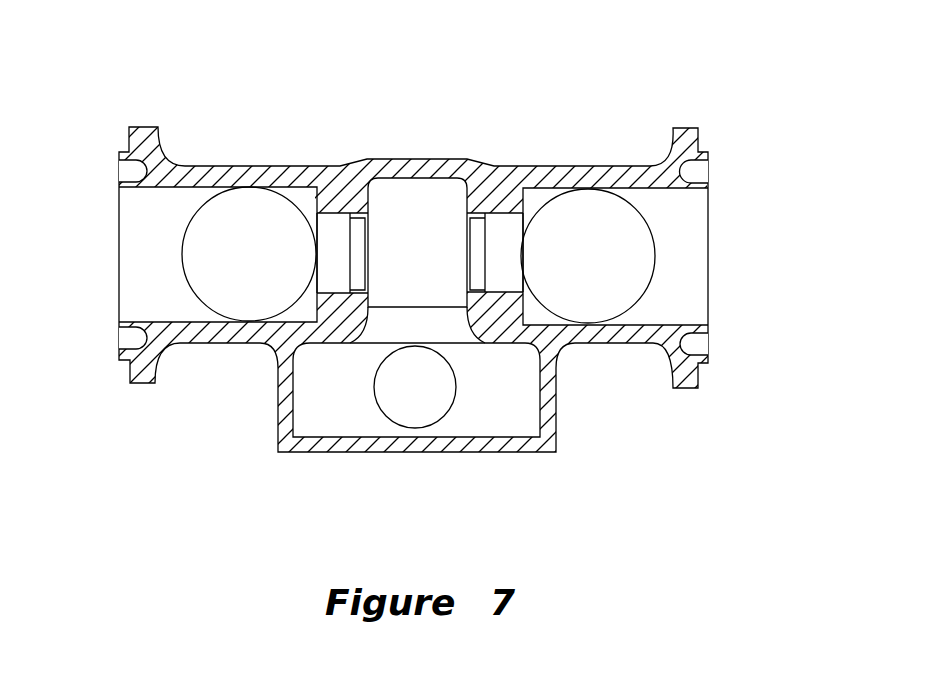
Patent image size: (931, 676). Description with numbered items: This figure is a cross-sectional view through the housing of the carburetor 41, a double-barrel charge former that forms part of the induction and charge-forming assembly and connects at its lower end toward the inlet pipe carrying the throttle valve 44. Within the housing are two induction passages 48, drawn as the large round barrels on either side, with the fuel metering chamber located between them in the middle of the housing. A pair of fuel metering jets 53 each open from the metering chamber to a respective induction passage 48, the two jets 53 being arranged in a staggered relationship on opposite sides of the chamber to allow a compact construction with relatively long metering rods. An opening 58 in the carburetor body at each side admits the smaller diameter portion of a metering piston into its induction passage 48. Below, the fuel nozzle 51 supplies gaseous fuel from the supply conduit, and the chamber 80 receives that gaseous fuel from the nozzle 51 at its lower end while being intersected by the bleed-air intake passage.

The charge former 41 is at (680, 118).
The throttle valve 44 is at (416, 178).
The induction passage 48 is at (230, 194).
The fuel nozzle 51 is at (404, 418).
The fuel metering jet 53 is at (336, 210).
The opening 58 is at (119, 195).
The chamber 80 is at (488, 425).